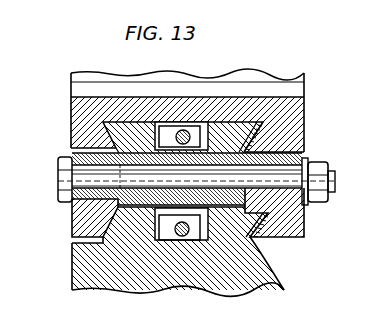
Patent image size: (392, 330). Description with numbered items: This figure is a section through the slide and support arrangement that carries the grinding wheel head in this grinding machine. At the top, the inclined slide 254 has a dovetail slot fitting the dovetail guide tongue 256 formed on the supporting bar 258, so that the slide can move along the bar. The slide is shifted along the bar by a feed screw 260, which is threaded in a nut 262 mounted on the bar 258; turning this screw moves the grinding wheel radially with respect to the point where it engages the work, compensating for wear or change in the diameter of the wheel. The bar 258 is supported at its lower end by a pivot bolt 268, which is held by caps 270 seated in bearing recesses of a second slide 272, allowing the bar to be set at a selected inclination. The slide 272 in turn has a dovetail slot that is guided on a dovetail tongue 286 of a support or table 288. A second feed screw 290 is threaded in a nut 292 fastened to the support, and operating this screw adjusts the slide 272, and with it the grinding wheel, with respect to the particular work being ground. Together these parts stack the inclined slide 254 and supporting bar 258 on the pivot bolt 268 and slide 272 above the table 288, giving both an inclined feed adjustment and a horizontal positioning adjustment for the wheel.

The inclined slide 254 is at (291, 110).
The dovetail guide tongue 256 is at (258, 134).
The supporting bar 258 is at (259, 262).
The feed screw 260 is at (181, 130).
The nut 262 is at (194, 122).
The pivot bolt 268 is at (337, 181).
The caps 270 is at (306, 154).
The slide 272 is at (296, 213).
The dovetail tongue 286 is at (133, 228).
The support or table 288 is at (72, 281).
The feed screw 290 is at (177, 237).
The nut 292 is at (209, 253).